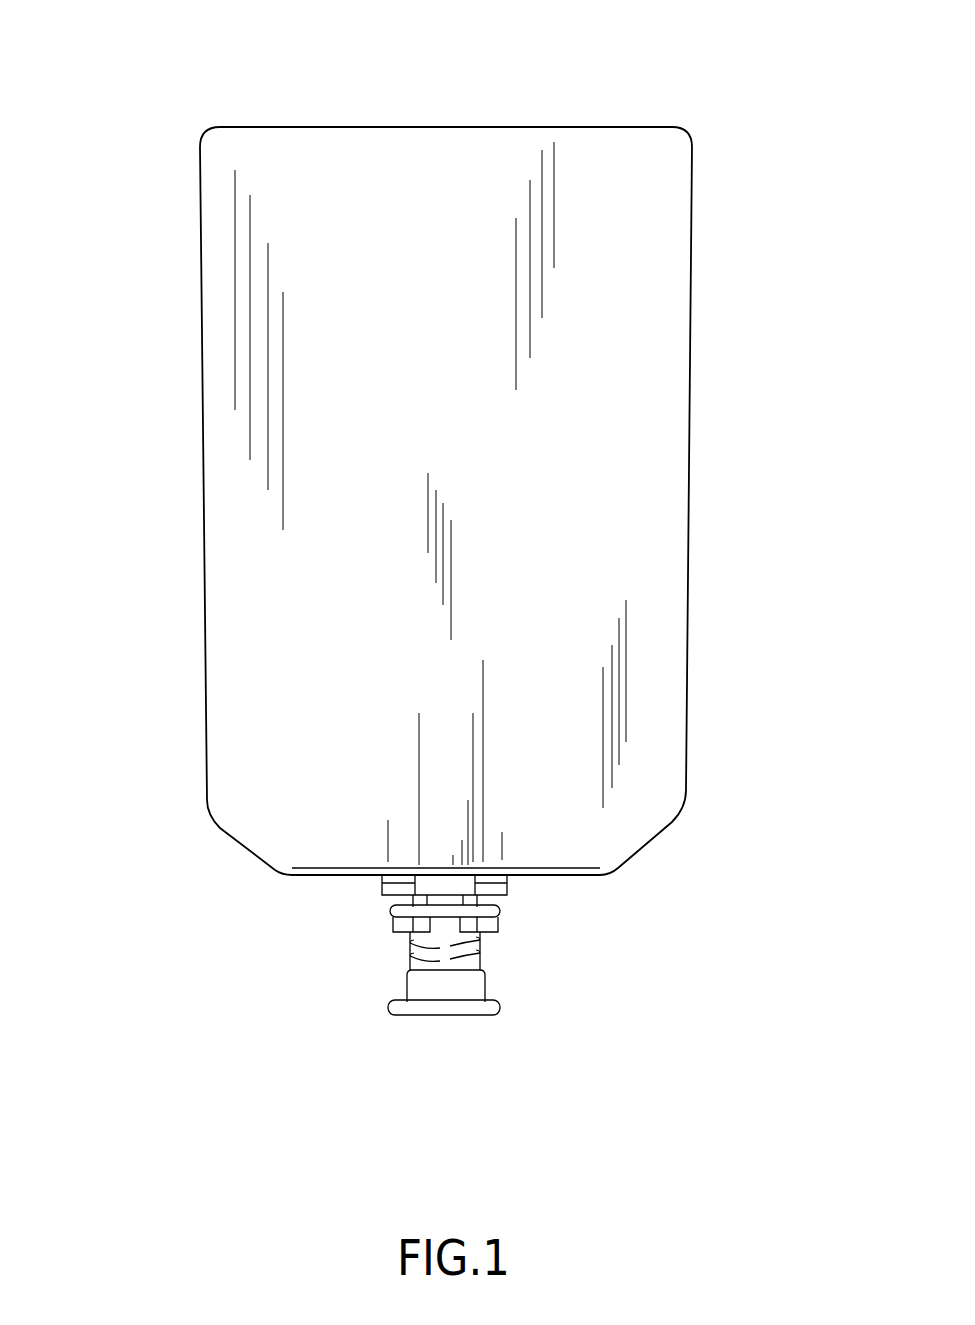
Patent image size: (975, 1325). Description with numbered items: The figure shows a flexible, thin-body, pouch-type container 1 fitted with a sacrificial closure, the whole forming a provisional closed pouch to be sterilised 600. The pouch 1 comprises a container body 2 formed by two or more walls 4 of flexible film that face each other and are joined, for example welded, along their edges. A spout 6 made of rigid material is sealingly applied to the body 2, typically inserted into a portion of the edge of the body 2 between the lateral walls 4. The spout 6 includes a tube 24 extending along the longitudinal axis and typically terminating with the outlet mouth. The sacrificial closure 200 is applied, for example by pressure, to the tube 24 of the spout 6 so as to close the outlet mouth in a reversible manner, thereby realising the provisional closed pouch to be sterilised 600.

The provisional closed pouch to be sterilised 600 is at (110, 142).
The flexible, thin-body, pouch-type container 1 is at (740, 210).
The container body 2 is at (700, 554).
The walls 4 is at (297, 708).
The spout 6 is at (522, 903).
The tube 24 is at (397, 951).
The sacrificial closure 200 is at (511, 1016).